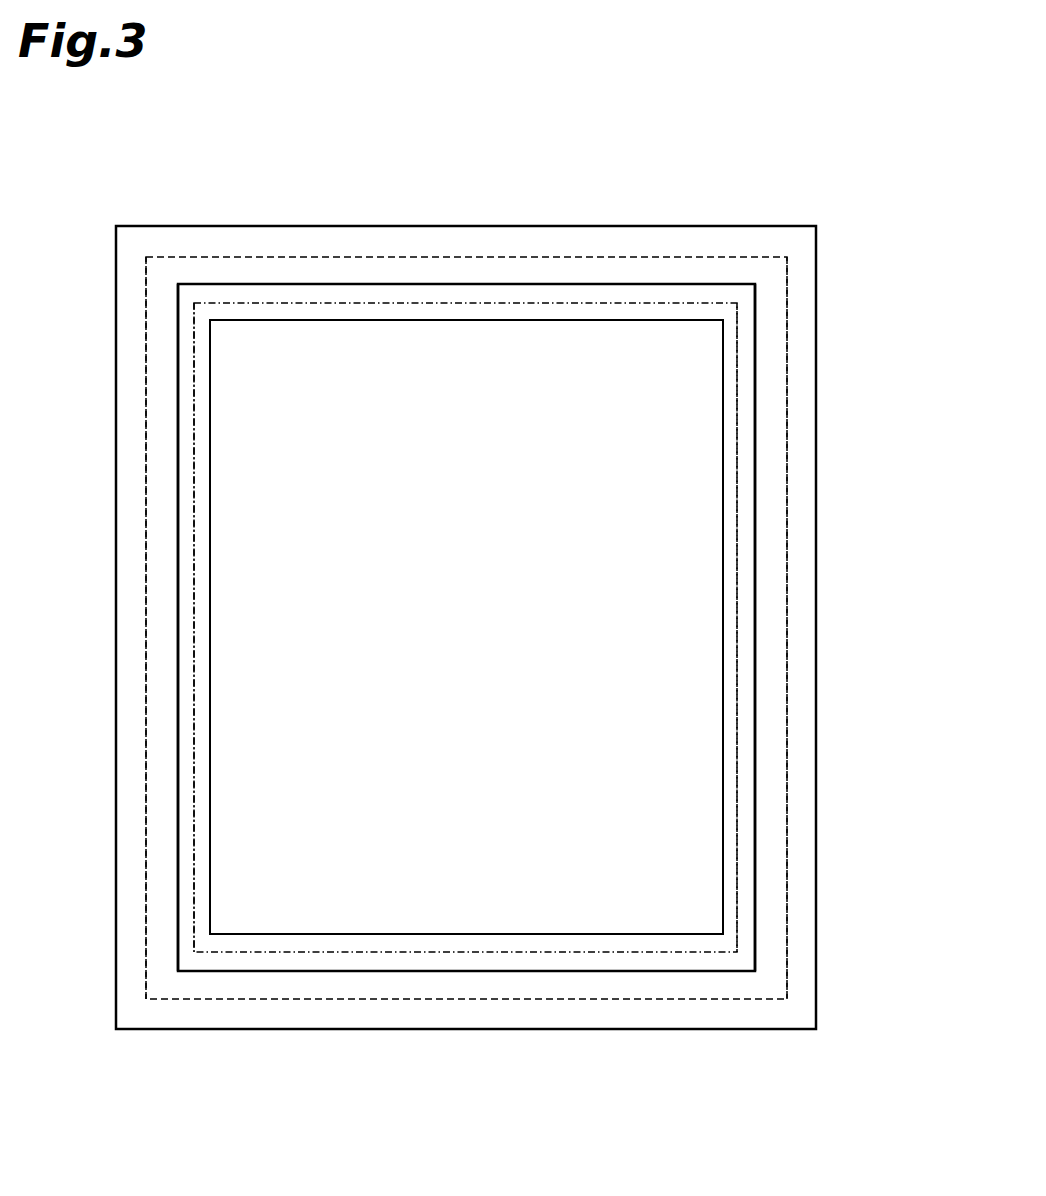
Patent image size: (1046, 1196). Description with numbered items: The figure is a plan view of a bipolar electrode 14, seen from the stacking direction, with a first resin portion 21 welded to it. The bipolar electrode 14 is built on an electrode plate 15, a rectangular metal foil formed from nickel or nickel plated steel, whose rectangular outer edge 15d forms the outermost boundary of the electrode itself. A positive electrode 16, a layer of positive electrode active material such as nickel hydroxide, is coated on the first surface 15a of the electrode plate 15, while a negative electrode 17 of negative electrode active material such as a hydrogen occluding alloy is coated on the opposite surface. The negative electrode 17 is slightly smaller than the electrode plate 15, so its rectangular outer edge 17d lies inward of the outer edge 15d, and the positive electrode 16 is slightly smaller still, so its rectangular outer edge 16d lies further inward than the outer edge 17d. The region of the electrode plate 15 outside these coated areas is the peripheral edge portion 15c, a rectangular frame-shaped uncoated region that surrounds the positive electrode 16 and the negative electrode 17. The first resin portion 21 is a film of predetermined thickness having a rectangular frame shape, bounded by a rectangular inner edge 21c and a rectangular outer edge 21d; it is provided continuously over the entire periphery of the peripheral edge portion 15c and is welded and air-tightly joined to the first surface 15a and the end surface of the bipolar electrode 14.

The bipolar electrode 14 is at (757, 209).
The first resin portion 21 is at (817, 268).
The outer edge of the first resin portion 21d is at (817, 372).
The inner edge of the first resin portion 21c is at (752, 478).
The positive electrode 16 is at (688, 625).
The outer edge of the positive electrode 16d is at (723, 707).
The negative electrode 17 is at (738, 787).
The outer edge of the negative electrode 17d is at (738, 858).
The electrode plate 15 is at (145, 488).
The first surface of the electrode plate 15a is at (193, 378).
The outer edge of the electrode plate 15d is at (145, 578).
The peripheral edge portion of the electrode plate 15c is at (160, 703).